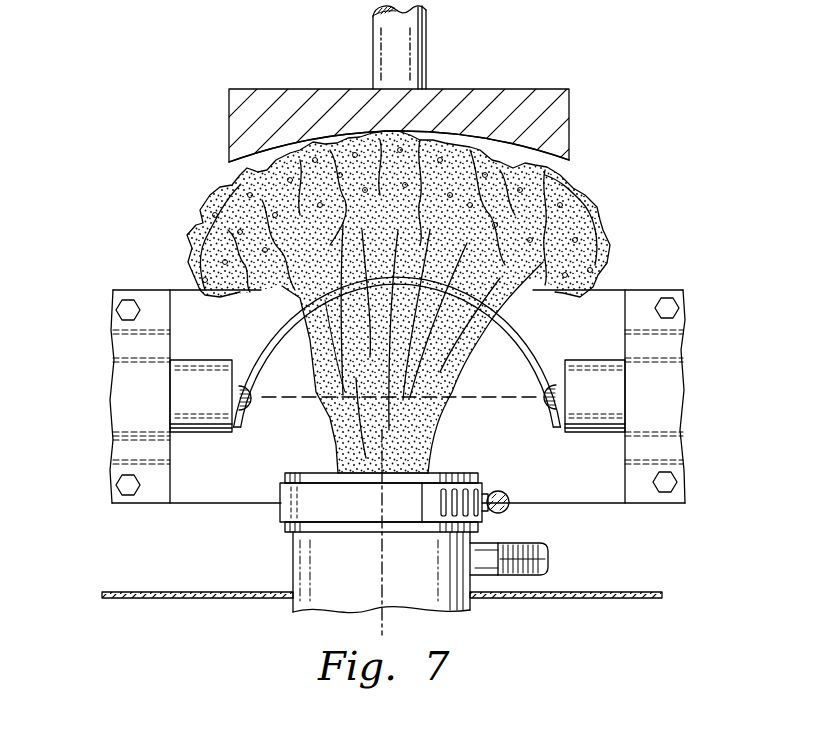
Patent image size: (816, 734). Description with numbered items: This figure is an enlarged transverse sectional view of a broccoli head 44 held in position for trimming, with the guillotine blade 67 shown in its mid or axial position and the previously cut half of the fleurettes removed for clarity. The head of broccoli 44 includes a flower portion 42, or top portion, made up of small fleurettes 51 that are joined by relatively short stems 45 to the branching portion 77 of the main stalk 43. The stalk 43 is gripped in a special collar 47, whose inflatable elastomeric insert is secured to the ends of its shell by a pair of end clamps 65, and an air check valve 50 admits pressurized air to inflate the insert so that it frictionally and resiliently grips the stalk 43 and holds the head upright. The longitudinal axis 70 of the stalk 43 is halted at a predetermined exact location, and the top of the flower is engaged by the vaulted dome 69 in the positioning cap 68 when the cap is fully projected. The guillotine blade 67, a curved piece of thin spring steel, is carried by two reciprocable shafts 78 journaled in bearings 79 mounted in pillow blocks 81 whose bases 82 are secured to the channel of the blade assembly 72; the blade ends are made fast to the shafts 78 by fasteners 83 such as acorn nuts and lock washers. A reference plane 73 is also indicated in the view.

The flower portion 42 is at (192, 222).
The stalk portion 43 is at (430, 452).
The head of broccoli 44 is at (586, 183).
The stems 45 is at (490, 298).
The collar 47 is at (292, 565).
The air check valve 50 is at (554, 545).
The fleurettes 51 is at (572, 213).
The end clamps 65 is at (278, 513).
The guillotine blade 67 is at (250, 332).
The positioning cap 68 is at (551, 88).
The vaulted dome 69 is at (466, 157).
The longitudinal axis 70 is at (380, 552).
The blade assembly 72 is at (398, 485).
The reference plane 73 is at (268, 398).
The branching portion 77 is at (466, 342).
The reciprocable shafts 78 is at (213, 426).
The bearings 79 is at (140, 437).
The pillow blocks 81 is at (137, 343).
The bases 82 is at (158, 486).
The fasteners 83 is at (250, 410).